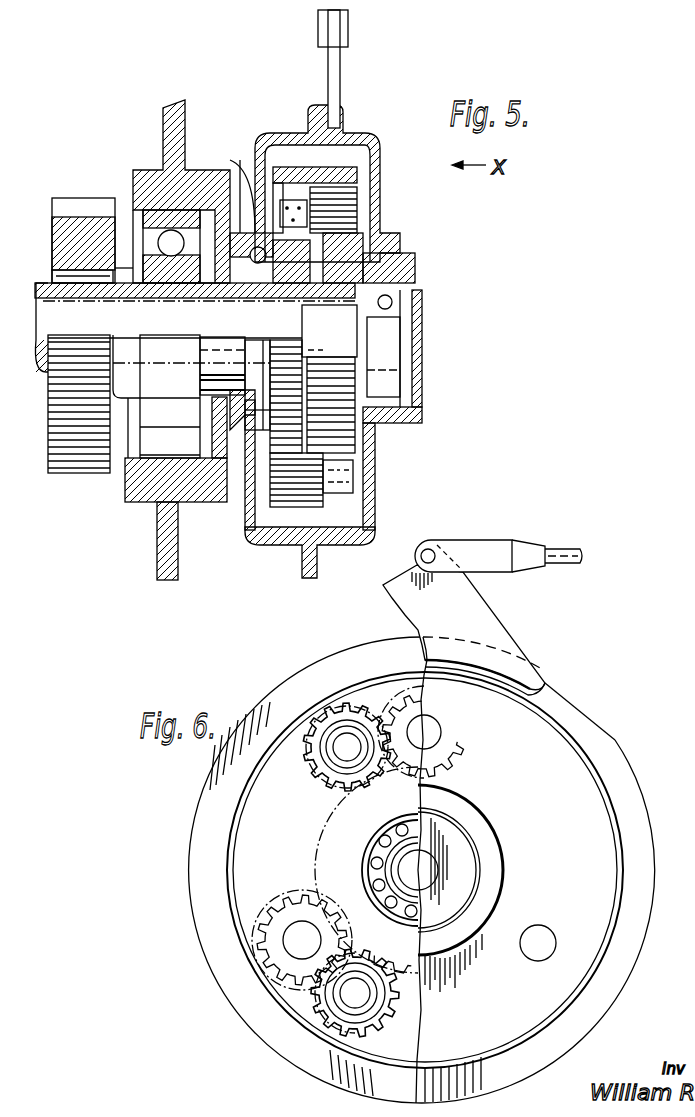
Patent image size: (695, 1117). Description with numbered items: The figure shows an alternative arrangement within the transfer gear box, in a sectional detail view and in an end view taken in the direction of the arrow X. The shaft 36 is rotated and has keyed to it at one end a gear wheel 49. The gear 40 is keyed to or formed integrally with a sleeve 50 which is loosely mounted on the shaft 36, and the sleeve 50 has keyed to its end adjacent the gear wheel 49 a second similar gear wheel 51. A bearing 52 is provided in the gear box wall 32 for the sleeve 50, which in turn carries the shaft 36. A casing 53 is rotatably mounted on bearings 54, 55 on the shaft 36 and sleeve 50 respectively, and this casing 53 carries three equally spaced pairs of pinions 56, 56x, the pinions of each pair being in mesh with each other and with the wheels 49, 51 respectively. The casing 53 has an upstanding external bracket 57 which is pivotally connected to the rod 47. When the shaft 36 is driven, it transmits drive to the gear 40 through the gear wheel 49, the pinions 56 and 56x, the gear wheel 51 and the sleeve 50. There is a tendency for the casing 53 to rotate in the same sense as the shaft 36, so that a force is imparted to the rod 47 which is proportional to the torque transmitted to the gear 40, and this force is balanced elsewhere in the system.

In FIG. 5, the gear box wall 32 is at (167, 135).
In FIG. 5, the shaft 36 is at (40, 297).
In FIG. 5, the gear 40 is at (60, 212).
In FIG. 5, the rod 47 is at (348, 38).
In FIG. 6, the rod 47 is at (548, 553).
In FIG. 5, the gear wheel 49 is at (355, 255).
In FIG. 6, the gear wheel 49 is at (395, 955).
In FIG. 5, the sleeve 50 is at (79, 283).
In FIG. 5, the second gear wheel 51 is at (335, 213).
In FIG. 5, the bearing 52 is at (167, 233).
In FIG. 5, the casing 53 is at (353, 143).
In FIG. 6, the casing 53 is at (427, 1033).
In FIG. 5, the bearing 54 is at (397, 265).
In FIG. 6, the bearing 54 is at (380, 870).
In FIG. 5, the bearing 55 is at (240, 193).
In FIG. 5, the pinion 56 is at (300, 243).
In FIG. 6, the pinion 56 is at (429, 716).
In FIG. 5, the pinion 56x is at (330, 502).
In FIG. 6, the pinion 56x is at (323, 772).
In FIG. 5, the external bracket 57 is at (336, 90).
In FIG. 6, the external bracket 57 is at (457, 580).